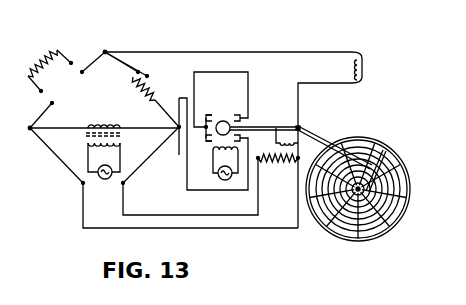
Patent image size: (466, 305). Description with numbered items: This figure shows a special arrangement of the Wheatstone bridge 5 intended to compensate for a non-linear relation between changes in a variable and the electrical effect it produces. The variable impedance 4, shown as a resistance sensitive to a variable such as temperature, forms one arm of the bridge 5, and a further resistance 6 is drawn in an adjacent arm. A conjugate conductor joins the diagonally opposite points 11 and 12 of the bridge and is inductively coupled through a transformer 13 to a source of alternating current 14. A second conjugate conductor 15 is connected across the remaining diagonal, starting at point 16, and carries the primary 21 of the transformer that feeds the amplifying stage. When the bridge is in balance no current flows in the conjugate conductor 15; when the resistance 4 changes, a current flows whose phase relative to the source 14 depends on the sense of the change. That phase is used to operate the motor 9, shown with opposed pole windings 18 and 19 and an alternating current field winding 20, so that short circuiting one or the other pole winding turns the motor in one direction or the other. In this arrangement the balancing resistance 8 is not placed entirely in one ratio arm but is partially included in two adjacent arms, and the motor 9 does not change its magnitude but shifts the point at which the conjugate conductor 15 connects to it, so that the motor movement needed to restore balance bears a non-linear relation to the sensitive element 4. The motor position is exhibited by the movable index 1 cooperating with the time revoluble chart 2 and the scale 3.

The movable index 1 is at (324, 141).
The time revoluble chart 2 is at (378, 236).
The scale 3 is at (383, 150).
The variable impedance 4 is at (35, 60).
The Wheatstone bridge 5 is at (113, 103).
The resistor 6 is at (147, 77).
The balancing resistance 8 is at (267, 161).
The motor 9 is at (220, 122).
The bridge point 11 is at (30, 128).
The bridge point 12 is at (178, 152).
The transformer 13 is at (85, 137).
The source of alternating current 14 is at (112, 179).
The conjugate conductor 15 is at (243, 52).
The bridge point 16 is at (105, 52).
The pole winding 18 is at (208, 116).
The pole winding 19 is at (244, 118).
The alternating current field winding 20 is at (214, 152).
The primary 21 is at (365, 70).